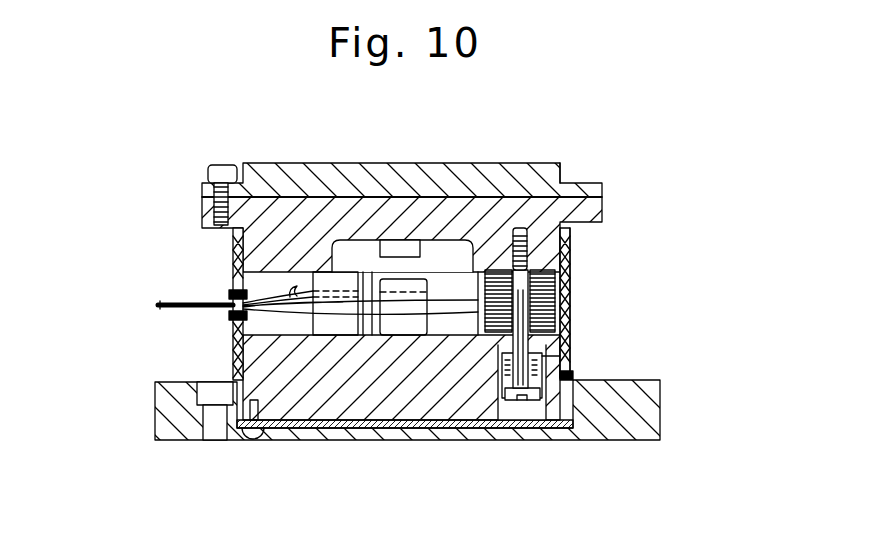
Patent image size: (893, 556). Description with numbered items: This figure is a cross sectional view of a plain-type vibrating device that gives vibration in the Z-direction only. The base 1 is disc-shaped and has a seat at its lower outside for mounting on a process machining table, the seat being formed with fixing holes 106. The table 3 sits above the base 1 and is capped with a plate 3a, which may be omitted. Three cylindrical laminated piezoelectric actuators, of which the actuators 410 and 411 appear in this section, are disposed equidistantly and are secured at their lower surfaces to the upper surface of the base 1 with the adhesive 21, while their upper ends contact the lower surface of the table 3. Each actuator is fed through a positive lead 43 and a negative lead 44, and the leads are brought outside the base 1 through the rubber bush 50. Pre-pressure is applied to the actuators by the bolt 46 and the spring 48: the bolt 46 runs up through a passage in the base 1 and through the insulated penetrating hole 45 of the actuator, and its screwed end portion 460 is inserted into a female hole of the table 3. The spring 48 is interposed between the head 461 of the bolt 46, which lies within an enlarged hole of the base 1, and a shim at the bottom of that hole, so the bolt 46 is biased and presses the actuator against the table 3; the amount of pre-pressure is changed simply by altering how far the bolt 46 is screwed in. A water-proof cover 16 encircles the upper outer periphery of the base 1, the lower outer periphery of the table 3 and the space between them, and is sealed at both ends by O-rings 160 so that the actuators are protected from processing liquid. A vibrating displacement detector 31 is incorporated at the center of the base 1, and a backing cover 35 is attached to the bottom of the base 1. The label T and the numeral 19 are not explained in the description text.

The bolt T is at (196, 180).
The table 3 is at (540, 211).
The plate 3a is at (555, 168).
The piezoelectric actuator 410 is at (330, 272).
The vibrating displacement detector 31 is at (418, 282).
The positive lead 43 is at (462, 318).
The negative lead 44 is at (473, 300).
The O-ring 160 is at (572, 242).
The screwed end portion 460 is at (572, 262).
The bolt 46 is at (572, 292).
The piezoelectric actuator 411 is at (572, 330).
The adhesive 21 is at (573, 317).
The spring 48 is at (548, 358).
The base plate 19 is at (660, 408).
The water-proof cover 16 is at (233, 258).
The rubber bush 50 is at (233, 308).
The fixing hole 106 is at (200, 383).
The backing cover 35 is at (355, 440).
The base 1 is at (398, 440).
The penetrating hole 45 is at (502, 345).
The head 461 is at (512, 398).